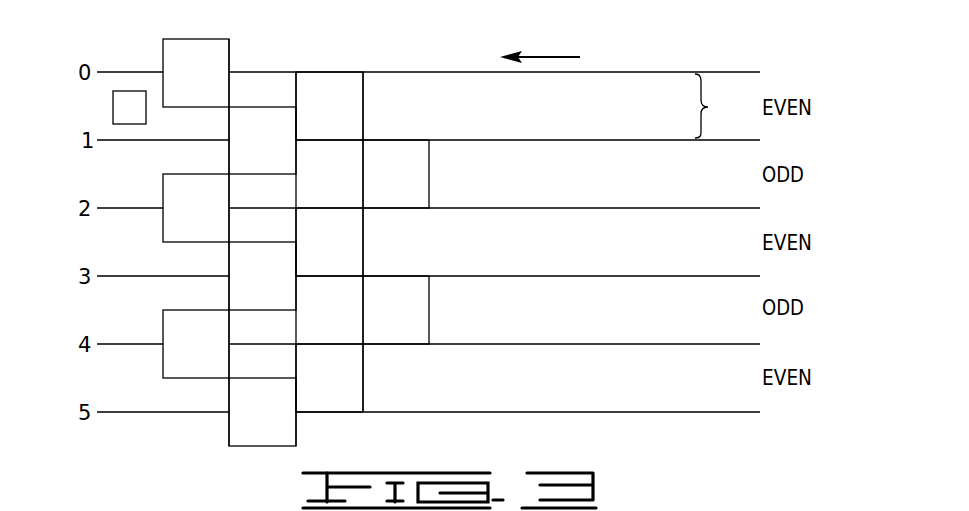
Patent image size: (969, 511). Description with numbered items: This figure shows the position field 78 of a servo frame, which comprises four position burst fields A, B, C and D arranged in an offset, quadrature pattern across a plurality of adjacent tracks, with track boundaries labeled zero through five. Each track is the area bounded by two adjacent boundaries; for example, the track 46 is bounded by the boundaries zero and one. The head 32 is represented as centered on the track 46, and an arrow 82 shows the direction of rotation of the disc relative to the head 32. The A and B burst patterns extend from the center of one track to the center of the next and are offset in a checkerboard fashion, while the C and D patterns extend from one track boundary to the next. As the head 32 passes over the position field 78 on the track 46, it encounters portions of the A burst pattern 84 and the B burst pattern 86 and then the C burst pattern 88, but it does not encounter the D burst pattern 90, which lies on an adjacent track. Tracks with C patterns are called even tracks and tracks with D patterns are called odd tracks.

The head 32 is at (118, 107).
The track 46 is at (720, 104).
The position field 78 is at (383, 49).
The arrow 82 is at (555, 58).
The A burst pattern 84 is at (190, 45).
The B burst pattern 86 is at (268, 174).
The C burst pattern 88 is at (312, 137).
The D burst pattern 90 is at (407, 202).